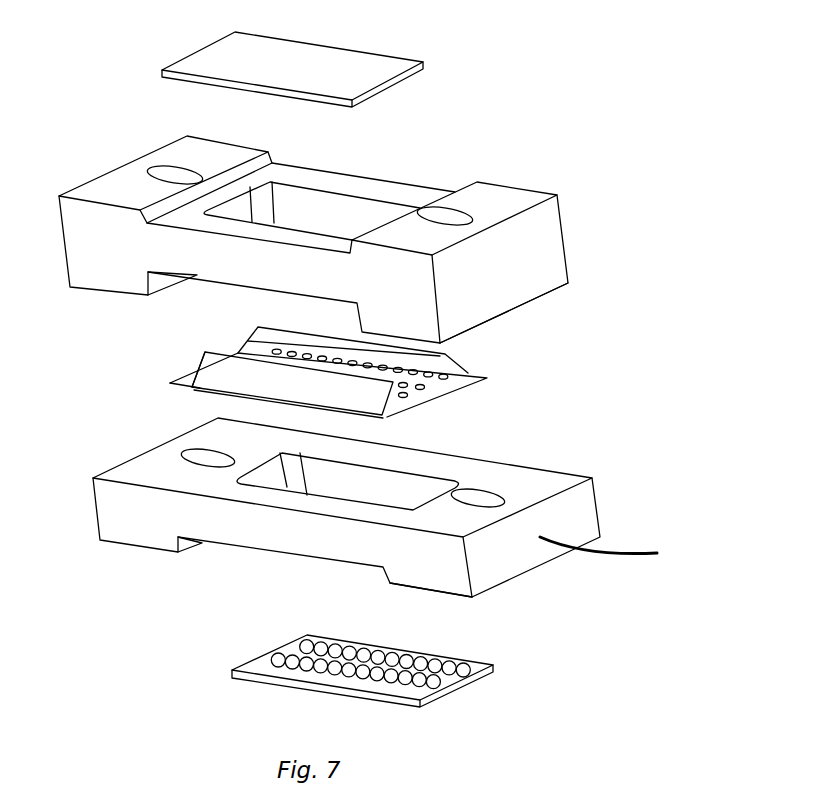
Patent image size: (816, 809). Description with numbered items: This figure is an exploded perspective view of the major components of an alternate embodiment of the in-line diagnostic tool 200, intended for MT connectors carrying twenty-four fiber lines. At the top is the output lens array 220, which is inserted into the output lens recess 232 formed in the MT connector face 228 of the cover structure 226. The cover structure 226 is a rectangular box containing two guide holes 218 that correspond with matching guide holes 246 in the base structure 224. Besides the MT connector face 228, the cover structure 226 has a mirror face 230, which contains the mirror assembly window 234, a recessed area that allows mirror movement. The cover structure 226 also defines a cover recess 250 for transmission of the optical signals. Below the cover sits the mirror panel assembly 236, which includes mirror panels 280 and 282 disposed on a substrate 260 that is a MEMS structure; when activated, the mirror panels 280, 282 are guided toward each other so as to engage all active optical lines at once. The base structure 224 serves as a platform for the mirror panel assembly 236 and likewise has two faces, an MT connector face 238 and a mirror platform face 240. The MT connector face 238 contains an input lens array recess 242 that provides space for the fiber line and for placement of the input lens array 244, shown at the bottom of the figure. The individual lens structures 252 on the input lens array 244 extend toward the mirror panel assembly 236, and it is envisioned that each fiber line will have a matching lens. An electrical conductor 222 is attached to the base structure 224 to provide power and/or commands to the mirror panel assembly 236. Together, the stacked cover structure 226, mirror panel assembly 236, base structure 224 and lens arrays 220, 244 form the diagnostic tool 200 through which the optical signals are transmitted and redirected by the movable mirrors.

The in-line diagnostic tool 200 is at (622, 425).
The guide holes 218 is at (180, 172).
The output lens array 220 is at (322, 50).
The electrical conductor 222 is at (655, 552).
The base structure 224 is at (319, 511).
The cover structure 226 is at (345, 228).
The MT connector face 228 is at (533, 180).
The mirror face 230 is at (537, 304).
The output lens recess 232 is at (366, 173).
The mirror assembly window 234 is at (213, 281).
The mirror panel assembly 236 is at (398, 372).
The MT connector face 238 is at (520, 574).
The mirror platform face 240 is at (127, 465).
The input lens array recess 242 is at (258, 547).
The input lens array 244 is at (371, 674).
The guide holes 246 is at (208, 458).
The cover recess 250 is at (327, 207).
The individual lens structure 252 is at (275, 652).
The substrate 260 is at (317, 378).
The mirror panel 280 is at (203, 362).
The mirror panel 282 is at (378, 350).